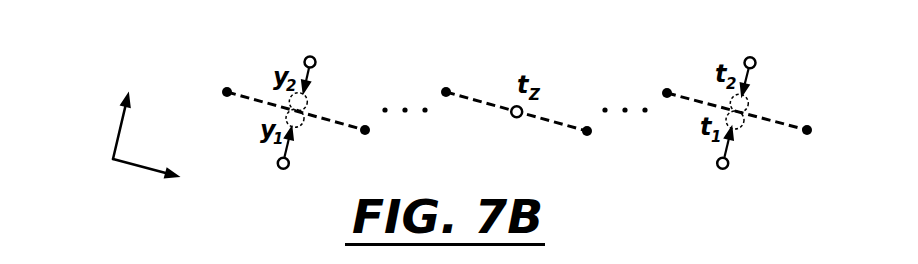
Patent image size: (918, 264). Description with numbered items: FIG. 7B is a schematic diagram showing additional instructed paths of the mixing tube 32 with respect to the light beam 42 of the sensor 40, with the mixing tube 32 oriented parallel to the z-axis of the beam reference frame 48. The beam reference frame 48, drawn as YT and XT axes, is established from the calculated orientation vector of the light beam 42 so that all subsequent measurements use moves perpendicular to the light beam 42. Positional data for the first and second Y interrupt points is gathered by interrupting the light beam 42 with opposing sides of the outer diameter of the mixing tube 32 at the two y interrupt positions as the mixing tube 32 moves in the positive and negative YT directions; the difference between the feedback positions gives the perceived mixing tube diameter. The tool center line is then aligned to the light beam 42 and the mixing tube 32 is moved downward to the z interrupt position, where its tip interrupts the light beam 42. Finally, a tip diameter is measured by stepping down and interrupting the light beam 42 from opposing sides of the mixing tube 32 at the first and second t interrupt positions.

The beam reference frame 48 is at (118, 135).
The light beam 42 is at (325, 115).
The sensor 40 is at (365, 132).
The mixing tube 32 is at (310, 56).